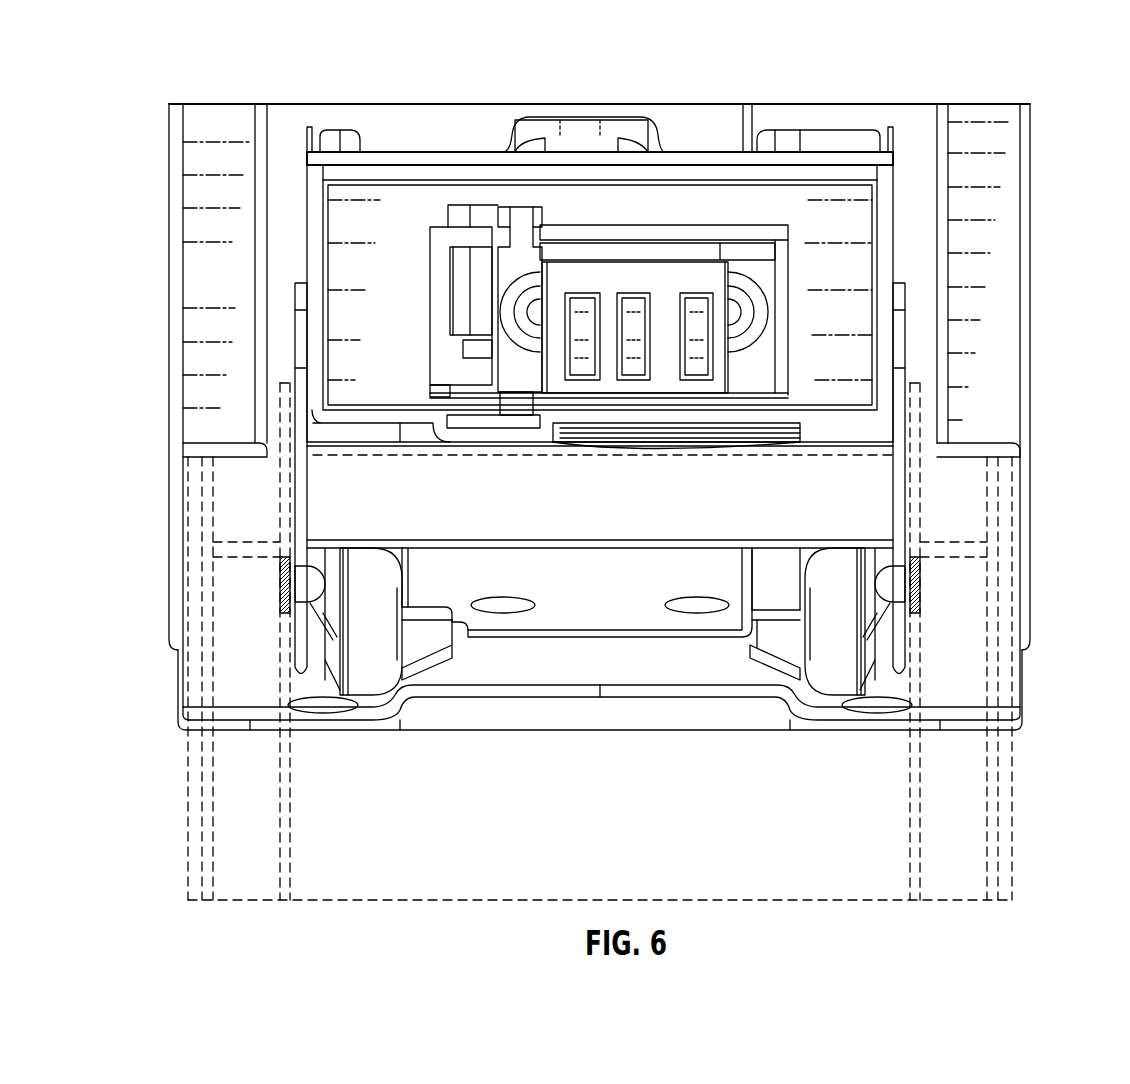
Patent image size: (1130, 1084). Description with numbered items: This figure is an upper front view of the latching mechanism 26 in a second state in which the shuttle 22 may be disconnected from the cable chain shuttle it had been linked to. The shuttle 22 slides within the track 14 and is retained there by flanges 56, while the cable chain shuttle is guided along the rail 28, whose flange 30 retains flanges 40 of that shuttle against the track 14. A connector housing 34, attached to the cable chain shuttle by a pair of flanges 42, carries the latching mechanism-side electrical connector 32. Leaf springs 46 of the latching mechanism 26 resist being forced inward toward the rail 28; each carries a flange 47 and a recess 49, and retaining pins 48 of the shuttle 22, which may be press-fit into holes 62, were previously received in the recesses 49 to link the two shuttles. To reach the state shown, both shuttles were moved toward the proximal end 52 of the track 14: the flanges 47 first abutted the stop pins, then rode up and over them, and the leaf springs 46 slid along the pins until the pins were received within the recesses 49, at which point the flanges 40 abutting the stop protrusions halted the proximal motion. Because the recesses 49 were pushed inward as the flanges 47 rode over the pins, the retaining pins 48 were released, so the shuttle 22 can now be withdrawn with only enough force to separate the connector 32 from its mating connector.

The track 14 is at (1032, 188).
The shuttle 22 is at (990, 483).
The latching mechanism 26 is at (176, 70).
The rail 28 is at (605, 613).
The flange 30 is at (775, 600).
The latching mechanism-side electrical connector 32 is at (560, 318).
The connector housing 34 is at (340, 255).
The flange 40 is at (778, 645).
The flange 42 is at (907, 345).
The leaf spring 46 is at (835, 645).
The flange 47 is at (825, 647).
The retaining pin 48 is at (873, 613).
The recess 49 is at (880, 583).
The proximal end 52 is at (178, 722).
The flange 56 is at (992, 362).
The hole 62 is at (922, 548).